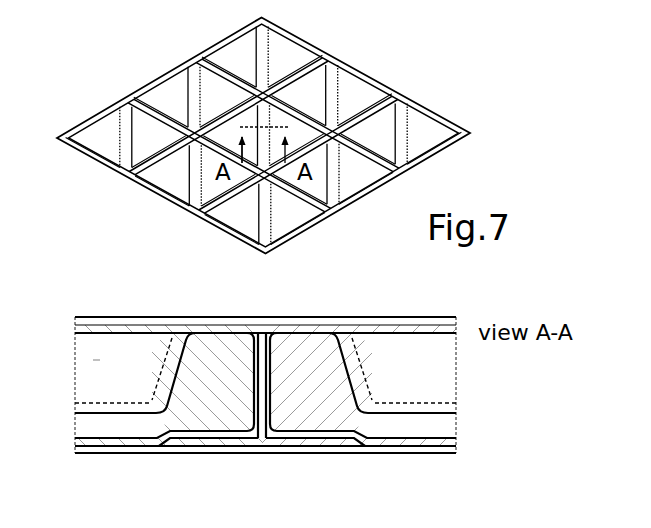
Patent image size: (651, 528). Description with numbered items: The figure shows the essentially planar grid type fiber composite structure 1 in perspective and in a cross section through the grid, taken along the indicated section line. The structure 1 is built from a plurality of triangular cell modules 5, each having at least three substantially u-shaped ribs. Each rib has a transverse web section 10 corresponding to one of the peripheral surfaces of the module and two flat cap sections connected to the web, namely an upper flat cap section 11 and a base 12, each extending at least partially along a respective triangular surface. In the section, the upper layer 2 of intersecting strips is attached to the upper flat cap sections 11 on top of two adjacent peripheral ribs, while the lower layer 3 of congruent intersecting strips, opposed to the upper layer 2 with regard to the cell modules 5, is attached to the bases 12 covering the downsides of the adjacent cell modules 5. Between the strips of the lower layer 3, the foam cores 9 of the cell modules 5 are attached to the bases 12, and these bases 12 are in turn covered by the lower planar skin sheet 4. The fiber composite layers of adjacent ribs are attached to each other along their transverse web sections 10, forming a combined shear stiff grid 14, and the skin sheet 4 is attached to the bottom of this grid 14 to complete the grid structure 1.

The grid type fiber composite structure 1 is at (91, 107).
The upper layer 2 is at (257, 315).
The lower layer 3 is at (223, 448).
The lower planar skin sheet 4 is at (245, 455).
The triangular cell module 5 is at (93, 360).
The foam core 9 is at (100, 425).
The transverse web section 10 is at (252, 396).
The upper flat cap section 11 is at (203, 333).
The base 12 is at (123, 448).
The combined shear stiff grid 14 is at (274, 408).